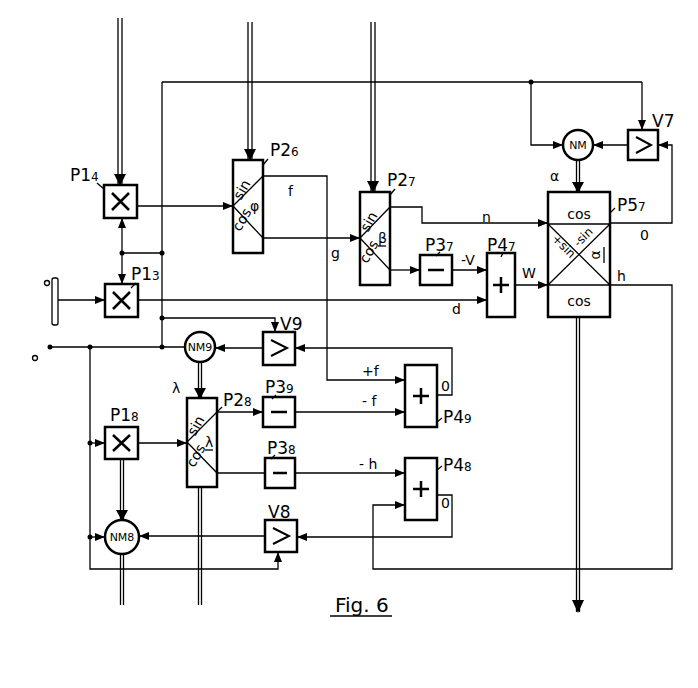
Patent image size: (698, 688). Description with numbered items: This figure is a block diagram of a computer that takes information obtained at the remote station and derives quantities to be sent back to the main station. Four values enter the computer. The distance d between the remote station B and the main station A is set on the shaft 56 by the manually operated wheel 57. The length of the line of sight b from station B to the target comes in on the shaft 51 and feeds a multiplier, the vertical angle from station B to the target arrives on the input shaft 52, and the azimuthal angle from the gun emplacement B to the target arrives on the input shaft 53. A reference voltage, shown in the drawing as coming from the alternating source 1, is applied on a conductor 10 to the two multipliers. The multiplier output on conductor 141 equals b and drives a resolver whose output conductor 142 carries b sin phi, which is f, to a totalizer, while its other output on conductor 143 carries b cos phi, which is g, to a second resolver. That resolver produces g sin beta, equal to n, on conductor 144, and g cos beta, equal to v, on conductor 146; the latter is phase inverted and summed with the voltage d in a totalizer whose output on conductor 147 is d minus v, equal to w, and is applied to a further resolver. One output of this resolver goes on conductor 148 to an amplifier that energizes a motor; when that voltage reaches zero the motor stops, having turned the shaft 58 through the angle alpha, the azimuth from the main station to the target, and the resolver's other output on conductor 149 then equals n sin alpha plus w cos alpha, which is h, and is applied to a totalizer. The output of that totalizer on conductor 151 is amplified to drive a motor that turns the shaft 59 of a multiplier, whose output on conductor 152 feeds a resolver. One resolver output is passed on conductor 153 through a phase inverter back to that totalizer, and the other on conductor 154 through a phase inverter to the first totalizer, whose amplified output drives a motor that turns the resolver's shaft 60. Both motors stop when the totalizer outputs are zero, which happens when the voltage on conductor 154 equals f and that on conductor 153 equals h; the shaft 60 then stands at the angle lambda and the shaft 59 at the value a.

The AC voltage source 1 is at (109, 356).
The conductor 10 is at (90, 388).
The shaft 51 is at (117, 94).
The input shaft 52 is at (371, 94).
The input shaft 53 is at (248, 94).
The shaft 56 is at (77, 300).
The manually operated wheel 57 is at (56, 278).
The output shaft 58 is at (582, 176).
The shaft 59 is at (128, 494).
The shaft 60 is at (203, 379).
The conductor 141 is at (171, 206).
The output conductor 142 is at (293, 176).
The conductor 143 is at (279, 238).
The conductor 144 is at (423, 211).
The conductor 146 is at (400, 272).
The conductor 147 is at (526, 287).
The conductor 148 is at (663, 225).
The conductor 149 is at (636, 286).
The conductor 151 is at (453, 520).
The conductor 152 is at (150, 444).
The conductor 153 is at (244, 475).
The conductor 154 is at (246, 415).